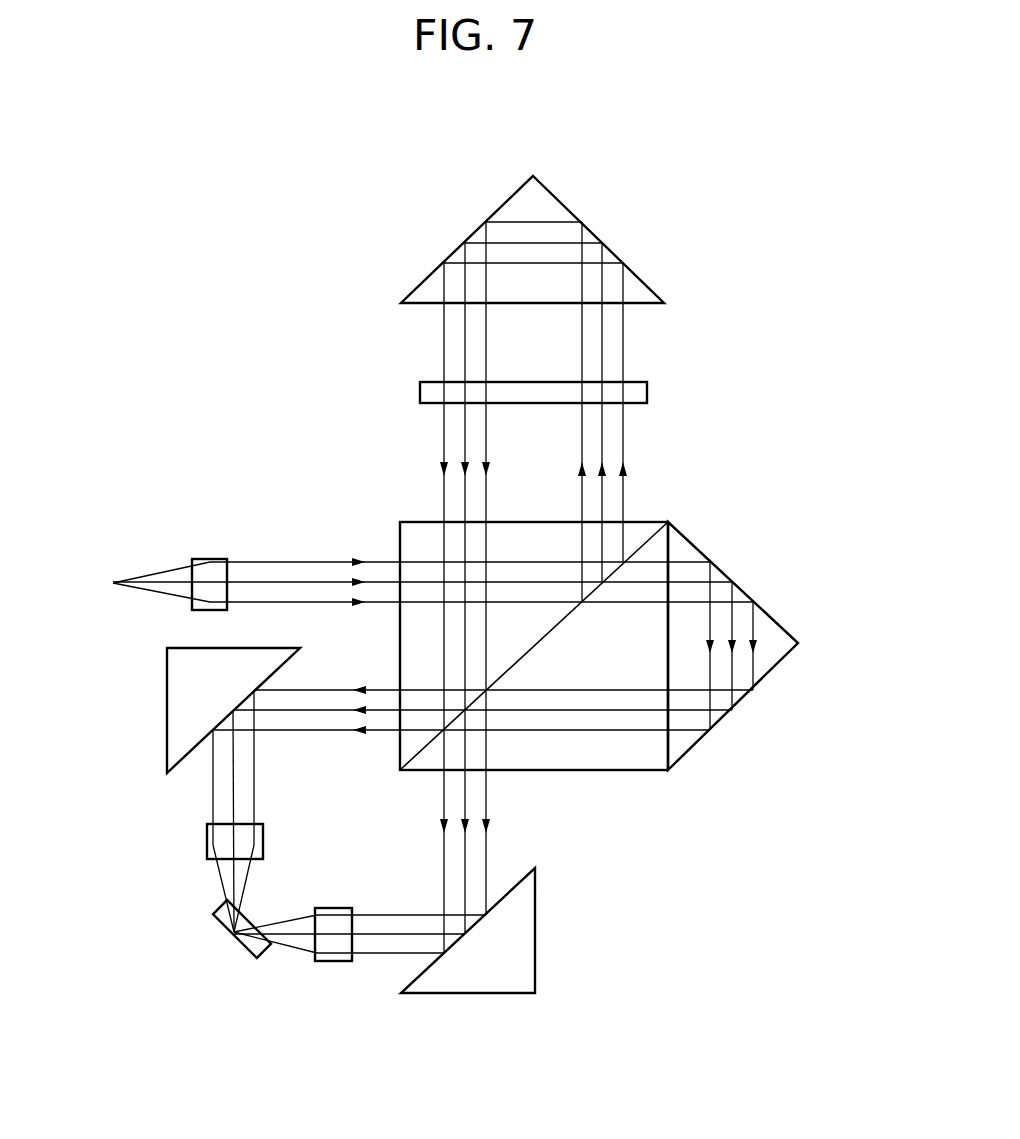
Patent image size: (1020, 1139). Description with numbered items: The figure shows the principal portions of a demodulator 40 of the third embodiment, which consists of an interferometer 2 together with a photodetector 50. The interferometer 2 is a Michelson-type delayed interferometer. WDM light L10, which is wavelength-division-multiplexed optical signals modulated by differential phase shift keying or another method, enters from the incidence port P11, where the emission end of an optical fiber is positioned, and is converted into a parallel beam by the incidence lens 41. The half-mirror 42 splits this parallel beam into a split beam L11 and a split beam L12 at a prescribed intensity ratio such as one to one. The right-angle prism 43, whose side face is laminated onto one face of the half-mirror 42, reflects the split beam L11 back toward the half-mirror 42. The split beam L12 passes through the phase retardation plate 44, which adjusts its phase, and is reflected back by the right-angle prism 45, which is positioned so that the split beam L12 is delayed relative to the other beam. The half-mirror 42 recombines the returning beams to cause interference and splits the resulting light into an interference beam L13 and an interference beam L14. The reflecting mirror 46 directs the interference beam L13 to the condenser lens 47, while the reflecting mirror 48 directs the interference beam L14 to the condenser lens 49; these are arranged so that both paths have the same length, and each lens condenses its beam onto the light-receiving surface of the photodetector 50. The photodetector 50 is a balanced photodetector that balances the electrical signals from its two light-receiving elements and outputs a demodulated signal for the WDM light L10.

The interferometer 2 is at (706, 453).
The demodulator 40 is at (809, 270).
The incidence lens 41 is at (212, 558).
The half-mirror 42 is at (617, 757).
The right-angle prism 43 is at (770, 657).
The phase retardation plate 44 is at (640, 380).
The right-angle prism 45 is at (555, 208).
The reflecting mirror 46 is at (165, 707).
The condenser lens 47 is at (205, 842).
The reflecting mirror 48 is at (520, 938).
The condenser lens 49 is at (333, 965).
The photodetector 50 is at (242, 952).
The incidence port P11 is at (109, 574).
The WDM light L10 is at (177, 580).
The split beam L11 is at (722, 618).
The split beam L12 is at (612, 492).
The interference beam L13 is at (325, 723).
The interference beam L14 is at (477, 802).